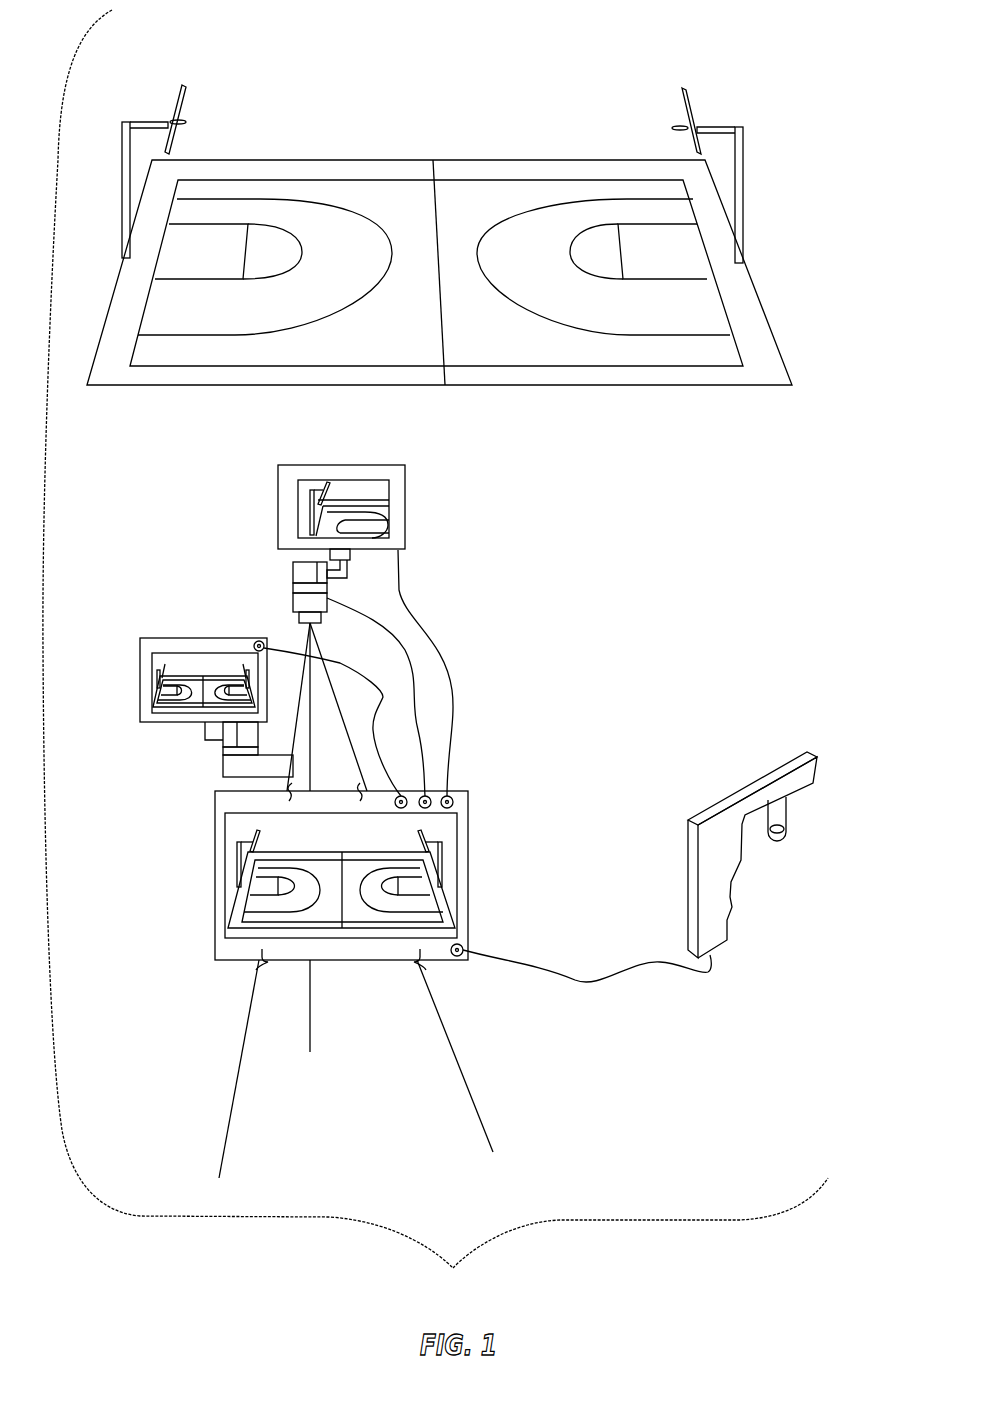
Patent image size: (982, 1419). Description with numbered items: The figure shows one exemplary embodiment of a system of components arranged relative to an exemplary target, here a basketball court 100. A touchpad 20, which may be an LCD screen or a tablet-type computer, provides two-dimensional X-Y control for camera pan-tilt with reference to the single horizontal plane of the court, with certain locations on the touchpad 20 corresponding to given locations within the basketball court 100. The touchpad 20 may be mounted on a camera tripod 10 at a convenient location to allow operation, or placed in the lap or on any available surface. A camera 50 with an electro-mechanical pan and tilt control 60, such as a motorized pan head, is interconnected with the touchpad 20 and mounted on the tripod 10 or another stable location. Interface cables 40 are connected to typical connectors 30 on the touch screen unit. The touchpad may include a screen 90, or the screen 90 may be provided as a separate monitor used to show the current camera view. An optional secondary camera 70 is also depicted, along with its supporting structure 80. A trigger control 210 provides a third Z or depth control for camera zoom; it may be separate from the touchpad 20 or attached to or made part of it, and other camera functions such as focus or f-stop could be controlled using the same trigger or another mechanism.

The camera tripod 10 is at (457, 1047).
The touchpad 20 is at (347, 876).
The connectors 30 is at (453, 800).
The interface cables 40 is at (378, 695).
The camera 50 is at (405, 498).
The pan and tilt control 60 is at (293, 587).
The secondary camera 70 is at (152, 688).
The monitor stand 80 is at (225, 757).
The screen 90 is at (317, 832).
The basketball court 100 is at (158, 392).
The trigger control 210 is at (753, 786).